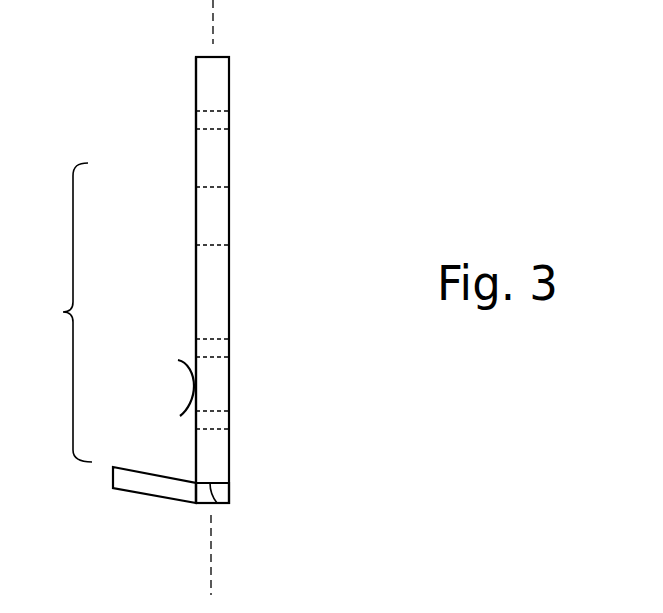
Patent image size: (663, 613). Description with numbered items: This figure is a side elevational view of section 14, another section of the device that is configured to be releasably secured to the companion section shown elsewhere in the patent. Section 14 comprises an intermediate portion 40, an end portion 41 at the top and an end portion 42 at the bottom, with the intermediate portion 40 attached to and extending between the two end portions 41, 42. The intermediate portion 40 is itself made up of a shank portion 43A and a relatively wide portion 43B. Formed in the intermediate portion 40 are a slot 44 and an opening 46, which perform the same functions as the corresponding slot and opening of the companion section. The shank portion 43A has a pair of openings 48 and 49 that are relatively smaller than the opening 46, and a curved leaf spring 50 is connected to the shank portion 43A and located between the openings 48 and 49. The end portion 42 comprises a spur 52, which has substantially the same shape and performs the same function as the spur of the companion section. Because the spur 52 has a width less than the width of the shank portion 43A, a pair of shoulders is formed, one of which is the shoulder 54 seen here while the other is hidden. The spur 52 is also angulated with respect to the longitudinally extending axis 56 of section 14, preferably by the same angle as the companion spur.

The section 14 is at (398, 158).
The intermediate portion 40 is at (61, 312).
The end portion 41 is at (215, 56).
The end portion 42 is at (228, 490).
The shank portion 43A is at (196, 305).
The relatively wide portion 43B is at (196, 162).
The slot 44 is at (215, 128).
The opening 46 is at (222, 243).
The opening 48 is at (210, 428).
The opening 49 is at (223, 355).
The curved leaf spring 50 is at (182, 378).
The spur 52 is at (143, 495).
The shoulder 54 is at (215, 506).
The longitudinally extending axis 56 is at (207, 0).